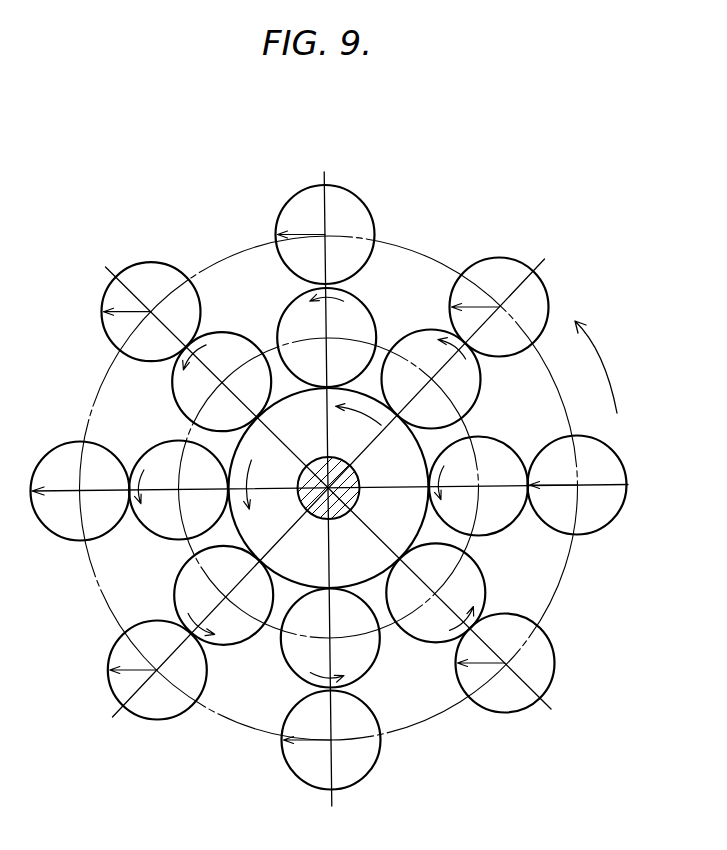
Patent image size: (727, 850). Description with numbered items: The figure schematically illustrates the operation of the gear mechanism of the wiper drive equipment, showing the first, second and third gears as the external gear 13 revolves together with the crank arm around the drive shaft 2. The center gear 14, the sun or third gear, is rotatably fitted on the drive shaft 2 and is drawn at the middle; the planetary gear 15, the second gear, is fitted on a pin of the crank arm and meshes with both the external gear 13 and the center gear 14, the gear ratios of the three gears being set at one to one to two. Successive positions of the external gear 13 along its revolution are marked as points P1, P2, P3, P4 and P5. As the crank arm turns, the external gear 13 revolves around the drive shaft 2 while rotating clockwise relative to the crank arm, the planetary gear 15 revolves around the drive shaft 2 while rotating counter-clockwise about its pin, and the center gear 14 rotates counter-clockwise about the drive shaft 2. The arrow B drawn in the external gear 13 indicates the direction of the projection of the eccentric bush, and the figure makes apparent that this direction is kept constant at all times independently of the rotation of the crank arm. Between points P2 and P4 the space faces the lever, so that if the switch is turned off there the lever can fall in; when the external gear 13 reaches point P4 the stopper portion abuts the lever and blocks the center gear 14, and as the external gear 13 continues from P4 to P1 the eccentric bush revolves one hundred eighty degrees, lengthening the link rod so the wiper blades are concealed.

The drive shaft 2 is at (338, 513).
The external gear 13 is at (527, 702).
The center gear 14 is at (370, 557).
The planetary gear 15 is at (430, 633).
The arrow B is at (538, 488).
The point P1 is at (593, 525).
The point P2 is at (535, 312).
The point P3 is at (352, 208).
The point P4 is at (95, 452).
The point P5 is at (598, 645).